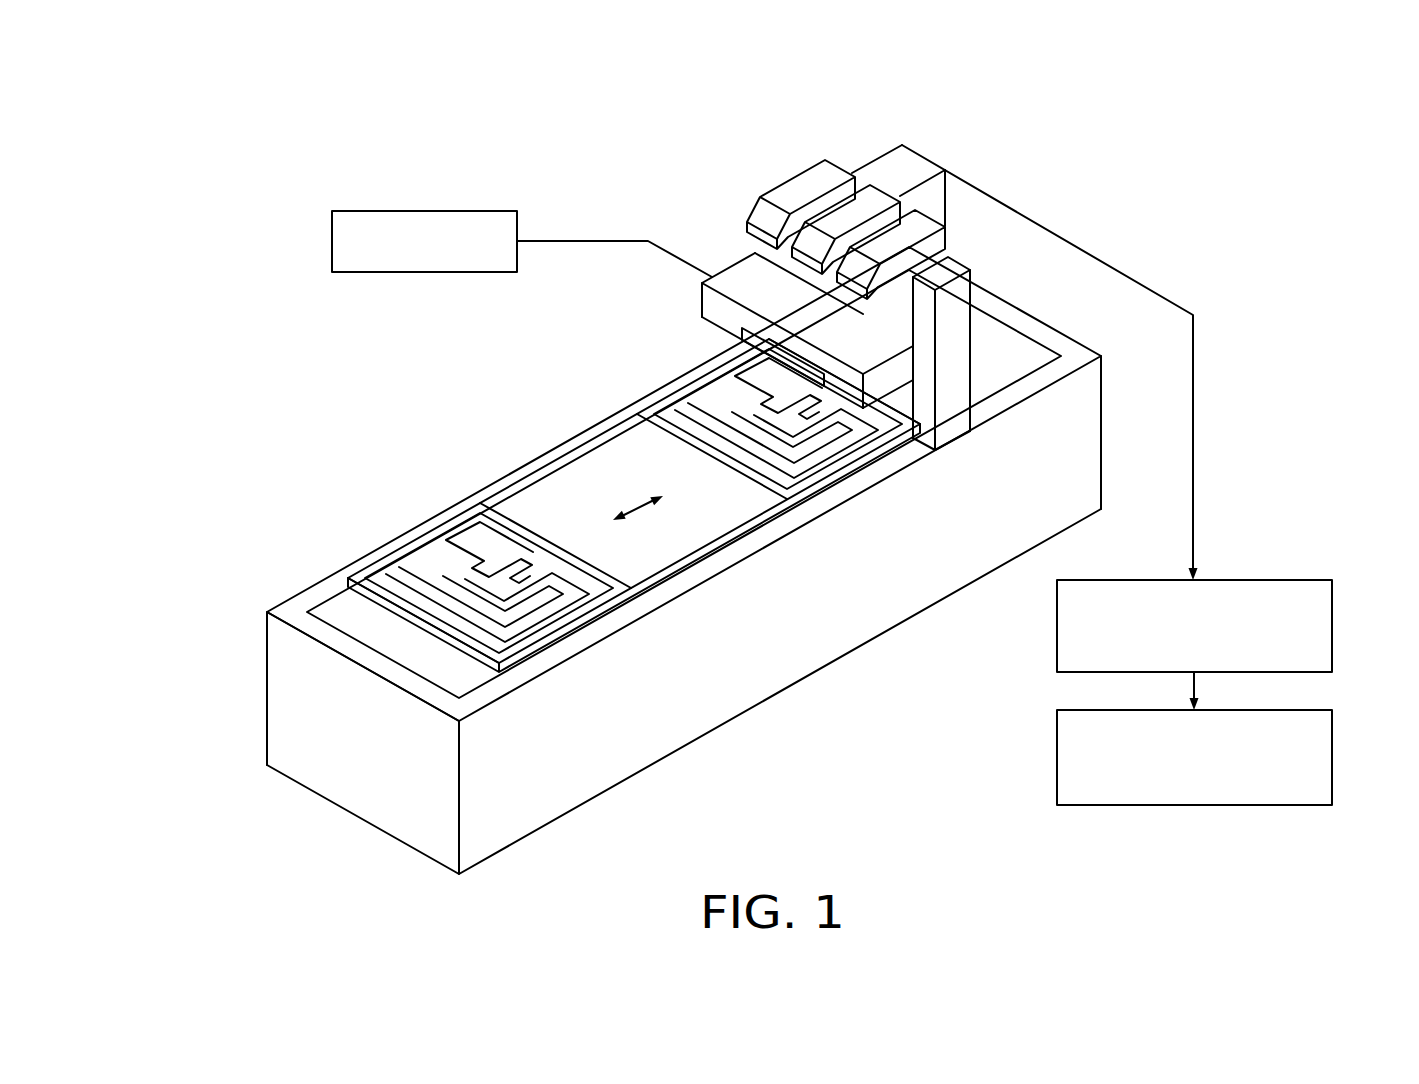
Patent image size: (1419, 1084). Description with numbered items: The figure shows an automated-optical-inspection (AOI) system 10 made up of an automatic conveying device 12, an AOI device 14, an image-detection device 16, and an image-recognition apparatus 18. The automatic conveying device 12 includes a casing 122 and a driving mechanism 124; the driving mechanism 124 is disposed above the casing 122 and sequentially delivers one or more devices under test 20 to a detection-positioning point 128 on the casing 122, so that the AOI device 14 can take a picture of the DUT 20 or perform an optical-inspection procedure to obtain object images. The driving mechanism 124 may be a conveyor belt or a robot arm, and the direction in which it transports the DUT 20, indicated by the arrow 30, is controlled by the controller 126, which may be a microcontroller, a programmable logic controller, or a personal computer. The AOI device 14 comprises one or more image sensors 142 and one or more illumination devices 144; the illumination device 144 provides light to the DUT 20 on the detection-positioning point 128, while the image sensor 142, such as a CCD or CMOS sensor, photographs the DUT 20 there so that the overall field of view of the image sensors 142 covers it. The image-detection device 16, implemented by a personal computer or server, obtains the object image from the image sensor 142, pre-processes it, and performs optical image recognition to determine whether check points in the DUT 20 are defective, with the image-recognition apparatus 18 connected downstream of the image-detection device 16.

The AOI system 10 is at (206, 150).
The automatic conveying device 12 is at (547, 449).
The casing 122 is at (336, 775).
The driving mechanism 124 is at (342, 609).
The controller 126 is at (341, 213).
The detection-positioning point 128 is at (665, 366).
The AOI device 14 is at (763, 260).
The image sensor 142 is at (877, 245).
The illumination device 144 is at (833, 388).
The image-detection device 16 is at (1334, 626).
The image-recognition apparatus 18 is at (1334, 756).
The device under test 20 is at (378, 573).
The arrow 30 is at (636, 503).